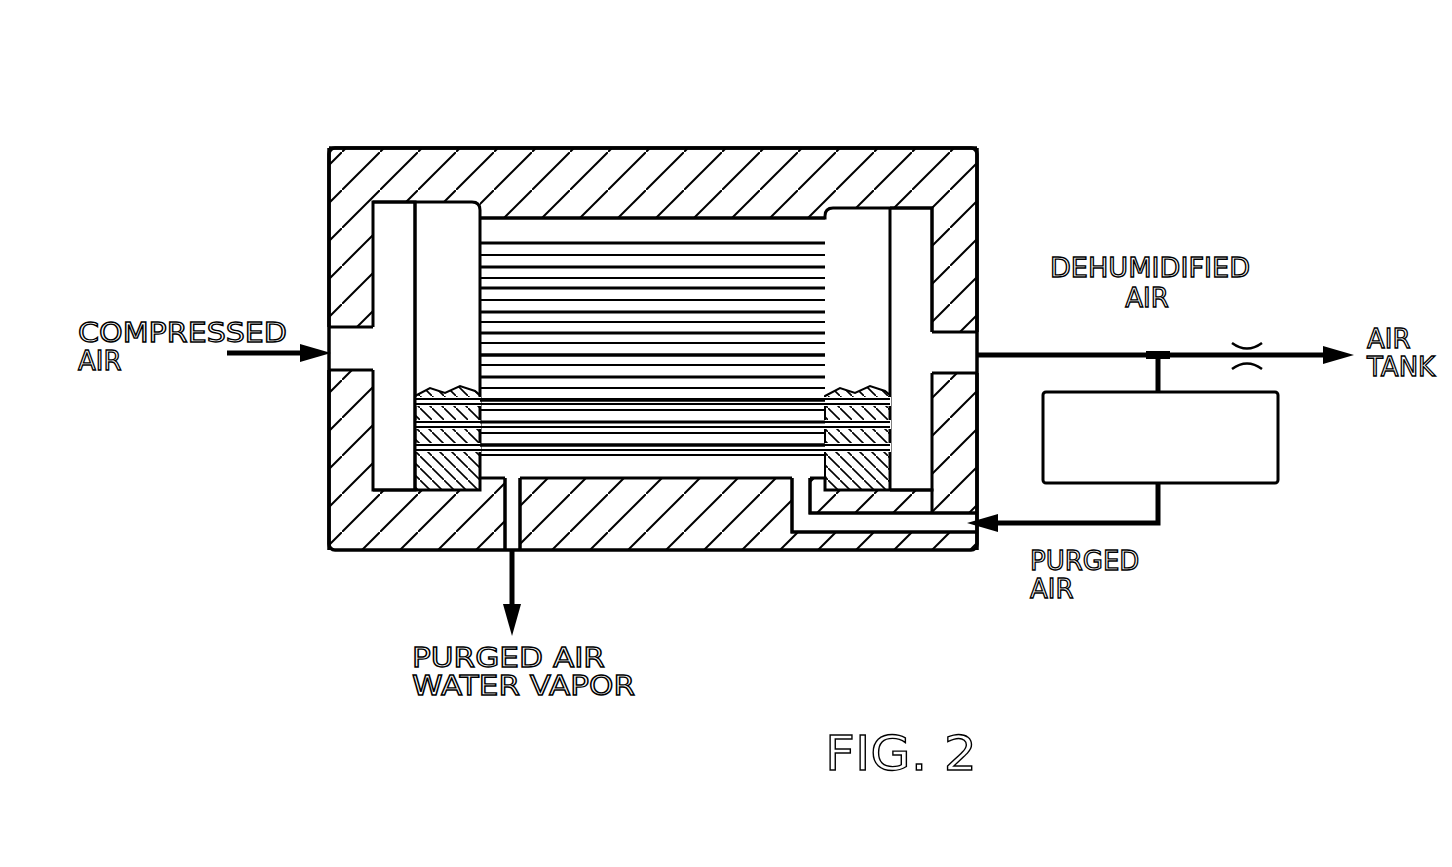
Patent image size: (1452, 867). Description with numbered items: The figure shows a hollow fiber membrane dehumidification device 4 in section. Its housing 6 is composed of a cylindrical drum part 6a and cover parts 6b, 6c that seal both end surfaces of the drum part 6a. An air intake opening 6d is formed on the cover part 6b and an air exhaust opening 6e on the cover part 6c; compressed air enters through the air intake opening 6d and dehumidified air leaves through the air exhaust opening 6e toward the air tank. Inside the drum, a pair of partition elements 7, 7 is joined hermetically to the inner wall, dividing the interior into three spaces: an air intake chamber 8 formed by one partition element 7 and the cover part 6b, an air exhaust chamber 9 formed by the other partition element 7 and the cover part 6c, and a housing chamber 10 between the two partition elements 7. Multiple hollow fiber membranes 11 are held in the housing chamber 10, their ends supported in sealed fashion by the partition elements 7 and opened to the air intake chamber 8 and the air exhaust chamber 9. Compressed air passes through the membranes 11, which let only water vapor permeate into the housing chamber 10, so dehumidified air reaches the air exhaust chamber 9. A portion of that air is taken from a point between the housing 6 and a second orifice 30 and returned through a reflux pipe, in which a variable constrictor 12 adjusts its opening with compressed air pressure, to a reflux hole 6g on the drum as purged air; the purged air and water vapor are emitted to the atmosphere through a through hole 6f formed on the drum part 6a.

The hollow fiber membrane dehumidification device 4 is at (993, 130).
The housing 6 is at (731, 138).
The drum part 6a is at (633, 158).
The cover part 6b is at (336, 222).
The cover part 6c is at (962, 217).
The air intake opening 6d is at (345, 362).
The air exhaust opening 6e is at (968, 348).
The through hole 6f is at (513, 505).
The reflux hole 6g is at (851, 522).
The partition element 7 is at (850, 217).
The air intake chamber 8 is at (390, 278).
The air exhaust chamber 9 is at (920, 281).
The housing chamber 10 is at (553, 228).
The hollow fiber membranes 11 is at (745, 362).
The variable constrictor 12 is at (1240, 487).
The second orifice 30 is at (1245, 346).